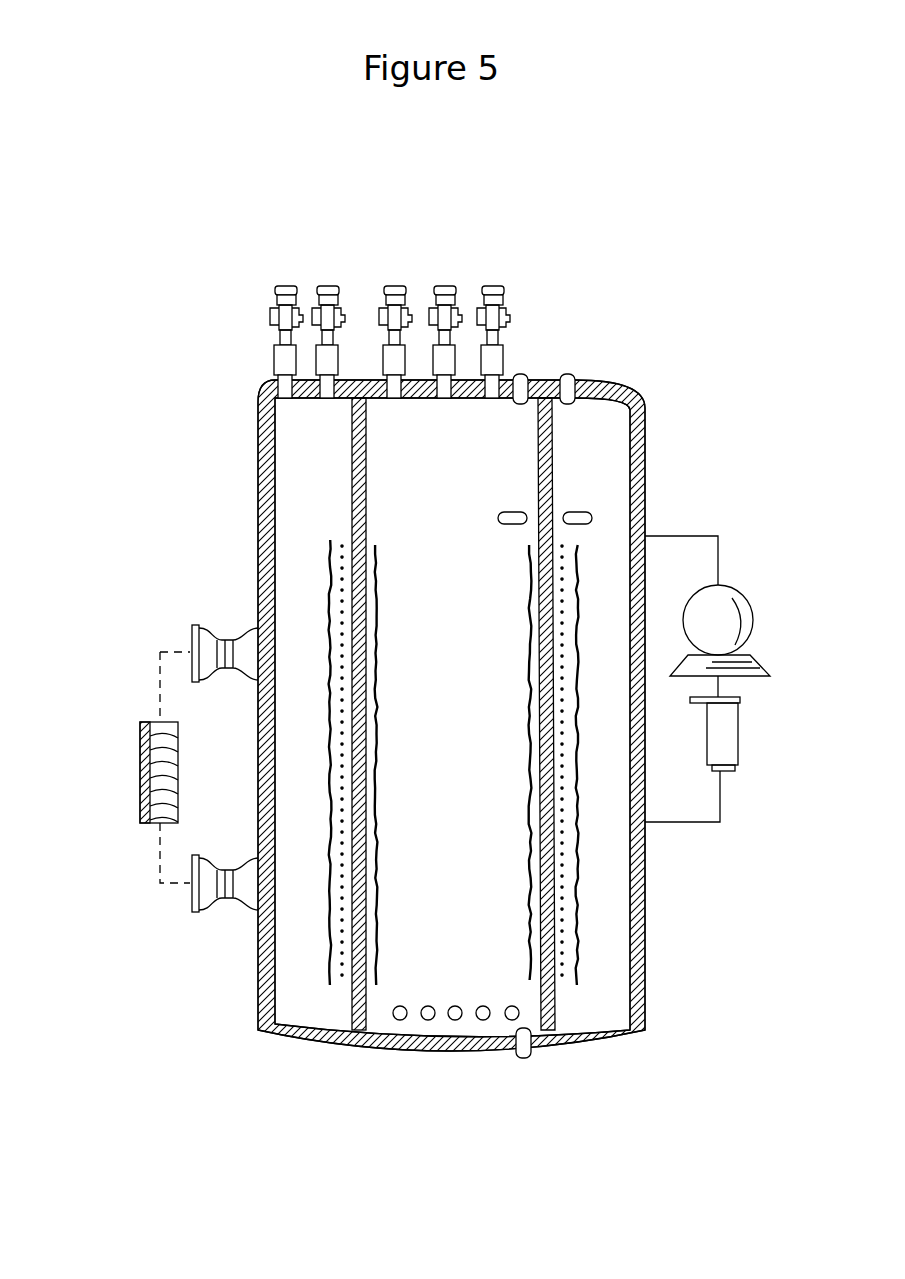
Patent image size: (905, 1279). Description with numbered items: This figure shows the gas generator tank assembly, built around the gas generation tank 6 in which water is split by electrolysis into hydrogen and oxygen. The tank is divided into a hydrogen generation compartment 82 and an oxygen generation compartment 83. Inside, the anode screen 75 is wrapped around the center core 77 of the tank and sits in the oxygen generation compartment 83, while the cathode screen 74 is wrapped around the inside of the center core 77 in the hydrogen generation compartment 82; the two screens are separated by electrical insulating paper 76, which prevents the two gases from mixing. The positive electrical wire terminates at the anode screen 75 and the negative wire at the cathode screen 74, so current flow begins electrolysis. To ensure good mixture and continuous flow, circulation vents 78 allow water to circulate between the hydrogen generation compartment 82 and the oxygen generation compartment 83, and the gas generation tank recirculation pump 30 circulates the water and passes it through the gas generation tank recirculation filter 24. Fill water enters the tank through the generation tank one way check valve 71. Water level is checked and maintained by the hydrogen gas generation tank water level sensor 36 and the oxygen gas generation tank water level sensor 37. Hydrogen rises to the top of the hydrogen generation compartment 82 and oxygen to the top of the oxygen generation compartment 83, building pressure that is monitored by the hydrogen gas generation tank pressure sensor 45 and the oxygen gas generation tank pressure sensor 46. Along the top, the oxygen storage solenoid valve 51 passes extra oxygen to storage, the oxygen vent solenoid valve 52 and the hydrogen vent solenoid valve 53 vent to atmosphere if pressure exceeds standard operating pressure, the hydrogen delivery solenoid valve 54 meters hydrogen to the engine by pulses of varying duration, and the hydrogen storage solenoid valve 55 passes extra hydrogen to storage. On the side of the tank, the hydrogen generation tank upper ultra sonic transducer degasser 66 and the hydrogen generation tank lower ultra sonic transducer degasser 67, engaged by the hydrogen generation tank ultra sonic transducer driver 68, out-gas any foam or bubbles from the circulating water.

The gas generation tank 6 is at (612, 1043).
The gas generation tank recirculation filter 24 is at (736, 706).
The gas generation tank recirculation pump 30 is at (752, 602).
The hydrogen gas generation tank water level sensor 36 is at (511, 526).
The oxygen gas generation tank water level sensor 37 is at (578, 511).
The hydrogen gas generation tank pressure sensor 45 is at (522, 372).
The oxygen gas generation tank pressure sensor 46 is at (570, 375).
The oxygen storage solenoid valve 51 is at (278, 346).
The oxygen vent solenoid valve 52 is at (323, 400).
The hydrogen vent solenoid valve 53 is at (390, 283).
The hydrogen delivery solenoid valve 54 is at (446, 400).
The hydrogen storage solenoid valve 55 is at (520, 300).
The hydrogen generation tank upper ultra sonic transducer degasser 66 is at (215, 634).
The hydrogen generation tank lower ultra sonic transducer degasser 67 is at (192, 908).
The hydrogen generation tank ultra sonic transducer driver 68 is at (134, 742).
The generation tank one way check valve 71 is at (520, 1057).
The cathode screen 74 is at (527, 760).
The anode screen 75 is at (328, 705).
The electrical insulating paper 76 is at (342, 978).
The center core 77 is at (555, 1018).
The circulation vents 78 is at (408, 1010).
The hydrogen generation compartment 82 is at (490, 710).
The oxygen generation compartment 83 is at (617, 710).